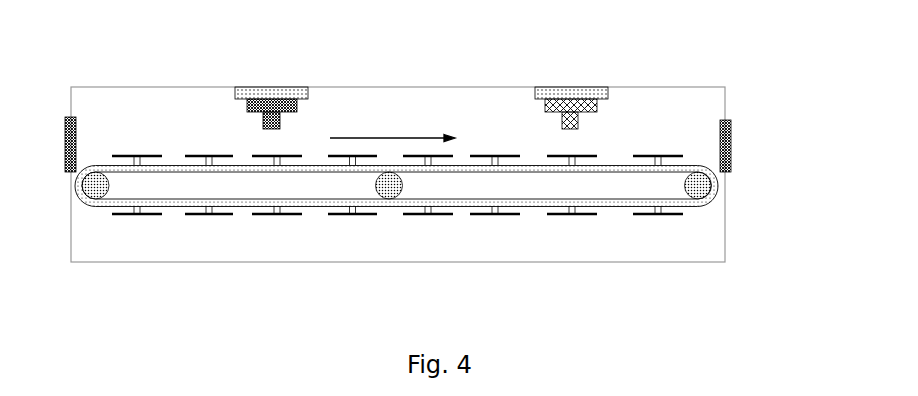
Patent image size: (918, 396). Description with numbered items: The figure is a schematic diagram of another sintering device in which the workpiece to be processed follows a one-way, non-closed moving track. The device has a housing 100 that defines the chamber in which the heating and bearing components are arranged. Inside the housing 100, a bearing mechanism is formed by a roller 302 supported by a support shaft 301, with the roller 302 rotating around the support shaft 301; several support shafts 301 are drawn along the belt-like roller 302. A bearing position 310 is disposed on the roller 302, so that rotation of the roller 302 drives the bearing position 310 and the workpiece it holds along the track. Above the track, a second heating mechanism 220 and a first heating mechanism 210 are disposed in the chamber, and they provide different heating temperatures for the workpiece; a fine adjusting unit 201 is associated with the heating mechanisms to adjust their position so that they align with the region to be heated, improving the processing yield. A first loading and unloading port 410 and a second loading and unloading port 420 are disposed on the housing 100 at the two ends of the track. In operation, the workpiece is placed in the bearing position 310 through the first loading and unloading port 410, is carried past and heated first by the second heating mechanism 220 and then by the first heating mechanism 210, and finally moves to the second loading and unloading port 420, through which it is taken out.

The housing 100 is at (542, 261).
The fine adjusting unit 201 is at (248, 73).
The second heating mechanism 220 is at (270, 123).
The first heating mechanism 210 is at (568, 107).
The support shaft 301 is at (95, 190).
The roller 302 is at (233, 203).
The bearing position 310 is at (283, 154).
The first loading and unloading port 410 is at (73, 118).
The second loading and unloading port 420 is at (720, 130).